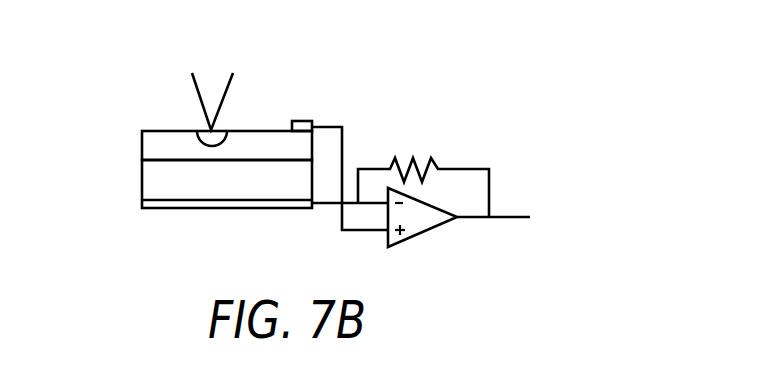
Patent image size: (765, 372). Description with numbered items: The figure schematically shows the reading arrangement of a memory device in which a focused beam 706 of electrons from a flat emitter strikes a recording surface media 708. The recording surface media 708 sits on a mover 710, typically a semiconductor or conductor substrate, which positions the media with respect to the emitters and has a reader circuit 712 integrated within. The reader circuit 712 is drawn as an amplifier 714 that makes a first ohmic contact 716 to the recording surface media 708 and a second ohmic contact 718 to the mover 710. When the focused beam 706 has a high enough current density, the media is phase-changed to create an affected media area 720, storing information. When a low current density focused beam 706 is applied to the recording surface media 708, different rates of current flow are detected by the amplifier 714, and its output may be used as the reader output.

The focused beam 706 is at (192, 86).
The recording surface media 708 is at (142, 152).
The mover 710 is at (142, 188).
The reader circuit 712 is at (345, 107).
The amplifier 714 is at (428, 254).
The first ohmic contact 716 is at (303, 120).
The second ohmic contact 718 is at (288, 209).
The affected media area 720 is at (205, 128).